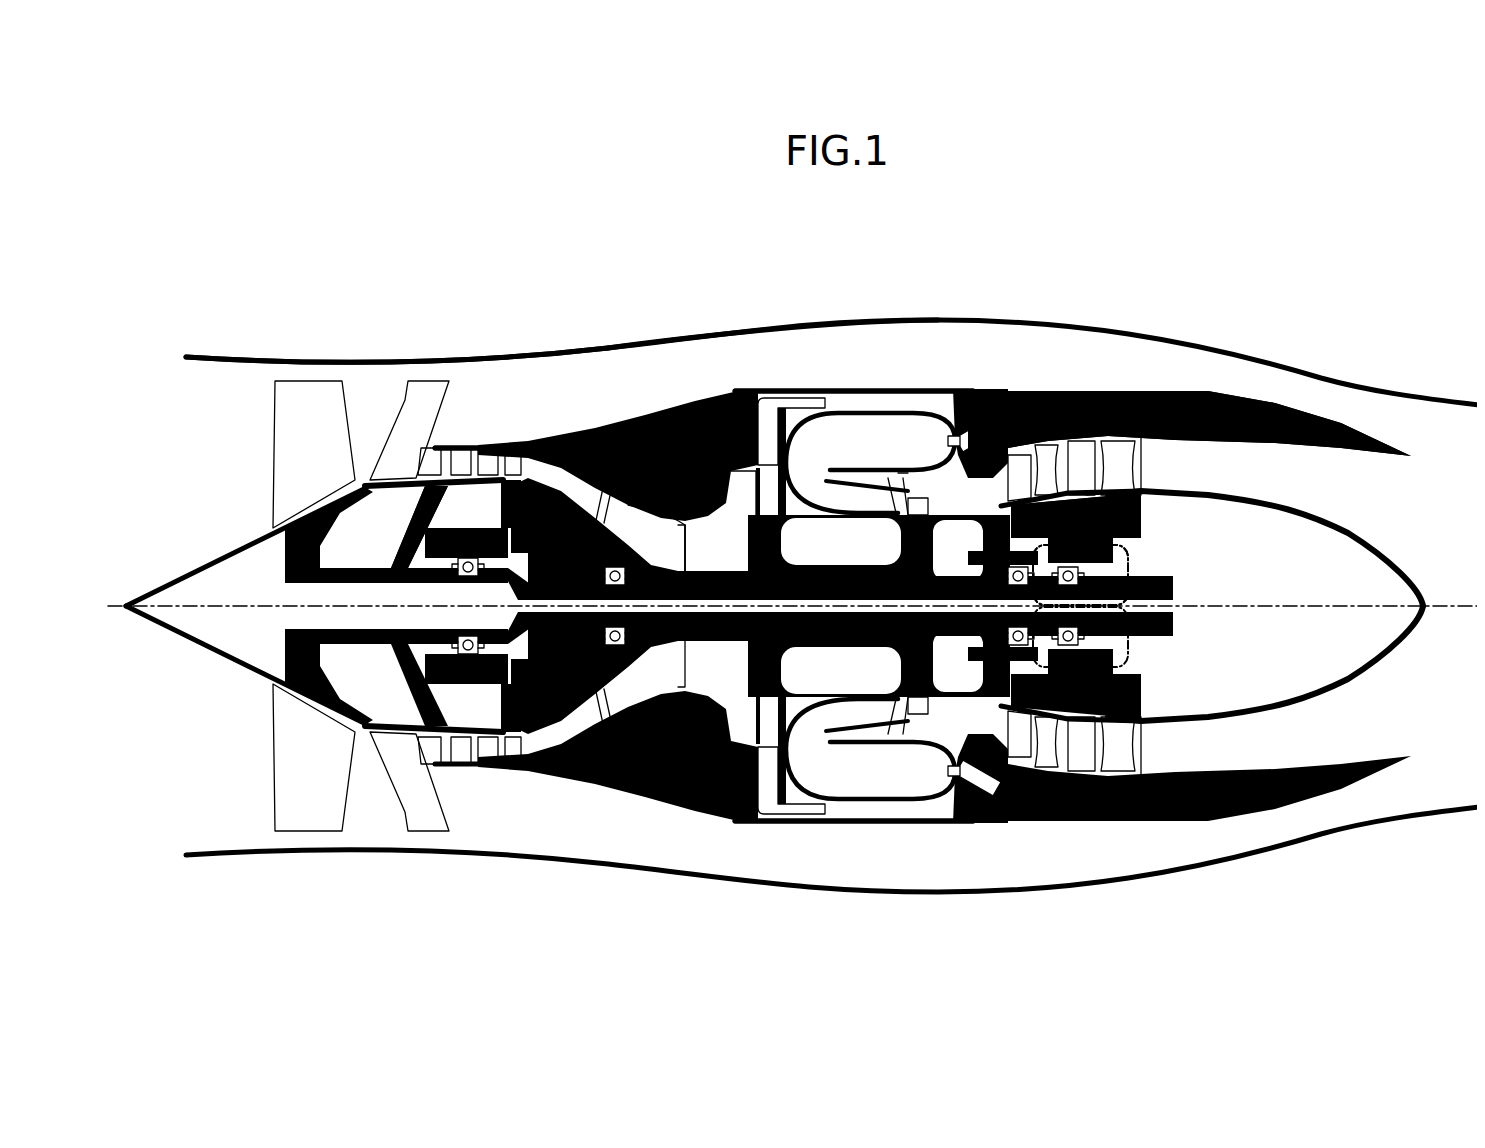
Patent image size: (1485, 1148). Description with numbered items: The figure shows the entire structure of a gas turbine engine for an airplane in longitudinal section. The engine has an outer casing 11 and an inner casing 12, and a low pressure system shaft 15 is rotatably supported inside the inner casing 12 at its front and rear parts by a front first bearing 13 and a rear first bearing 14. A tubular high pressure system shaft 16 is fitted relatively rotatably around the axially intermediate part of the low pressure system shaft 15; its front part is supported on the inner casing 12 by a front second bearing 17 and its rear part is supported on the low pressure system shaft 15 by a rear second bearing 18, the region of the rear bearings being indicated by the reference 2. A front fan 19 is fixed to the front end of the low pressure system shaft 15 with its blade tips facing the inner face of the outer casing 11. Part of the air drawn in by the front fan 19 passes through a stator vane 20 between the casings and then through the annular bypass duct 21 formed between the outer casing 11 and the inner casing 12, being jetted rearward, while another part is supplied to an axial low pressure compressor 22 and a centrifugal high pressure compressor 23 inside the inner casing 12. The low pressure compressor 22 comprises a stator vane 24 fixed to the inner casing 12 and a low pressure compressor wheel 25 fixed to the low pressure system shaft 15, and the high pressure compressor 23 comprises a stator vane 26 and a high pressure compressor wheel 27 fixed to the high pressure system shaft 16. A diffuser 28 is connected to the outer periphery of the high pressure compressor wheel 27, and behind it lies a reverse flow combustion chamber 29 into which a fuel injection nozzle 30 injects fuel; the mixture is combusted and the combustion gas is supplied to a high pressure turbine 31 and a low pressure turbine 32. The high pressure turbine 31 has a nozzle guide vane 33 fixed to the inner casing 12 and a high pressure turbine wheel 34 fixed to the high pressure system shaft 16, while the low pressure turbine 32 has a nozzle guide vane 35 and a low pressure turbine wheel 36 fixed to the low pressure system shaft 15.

The bearing support structure 2 is at (1135, 567).
The outer casing 11 is at (500, 350).
The inner casing 12 is at (620, 413).
The front first bearing 13 is at (472, 560).
The rear first bearing 14 is at (1063, 563).
The low pressure system shaft 15 is at (797, 583).
The high pressure system shaft 16 is at (836, 572).
The front second bearing 17 is at (605, 558).
The rear second bearing 18 is at (1010, 562).
The front fan 19 is at (285, 418).
The stator vane 20 is at (400, 437).
The annular bypass duct 21 is at (854, 614).
The axial low pressure compressor 22 is at (495, 427).
The centrifugal high pressure compressor 23 is at (680, 500).
The stator vane 24 is at (503, 460).
The low pressure compressor wheel 25 is at (427, 480).
The stator vane 26 is at (586, 615).
The high pressure compressor wheel 27 is at (752, 543).
The diffuser 28 is at (786, 392).
The reverse flow combustion chamber 29 is at (870, 606).
The fuel injection nozzle 30 is at (975, 412).
The high pressure turbine 31 is at (905, 478).
The low pressure turbine 32 is at (1097, 405).
The nozzle guide vane 33 is at (870, 485).
The high pressure turbine wheel 34 is at (972, 520).
The nozzle guide vane 35 is at (1040, 452).
The low pressure turbine wheel 36 is at (1080, 489).